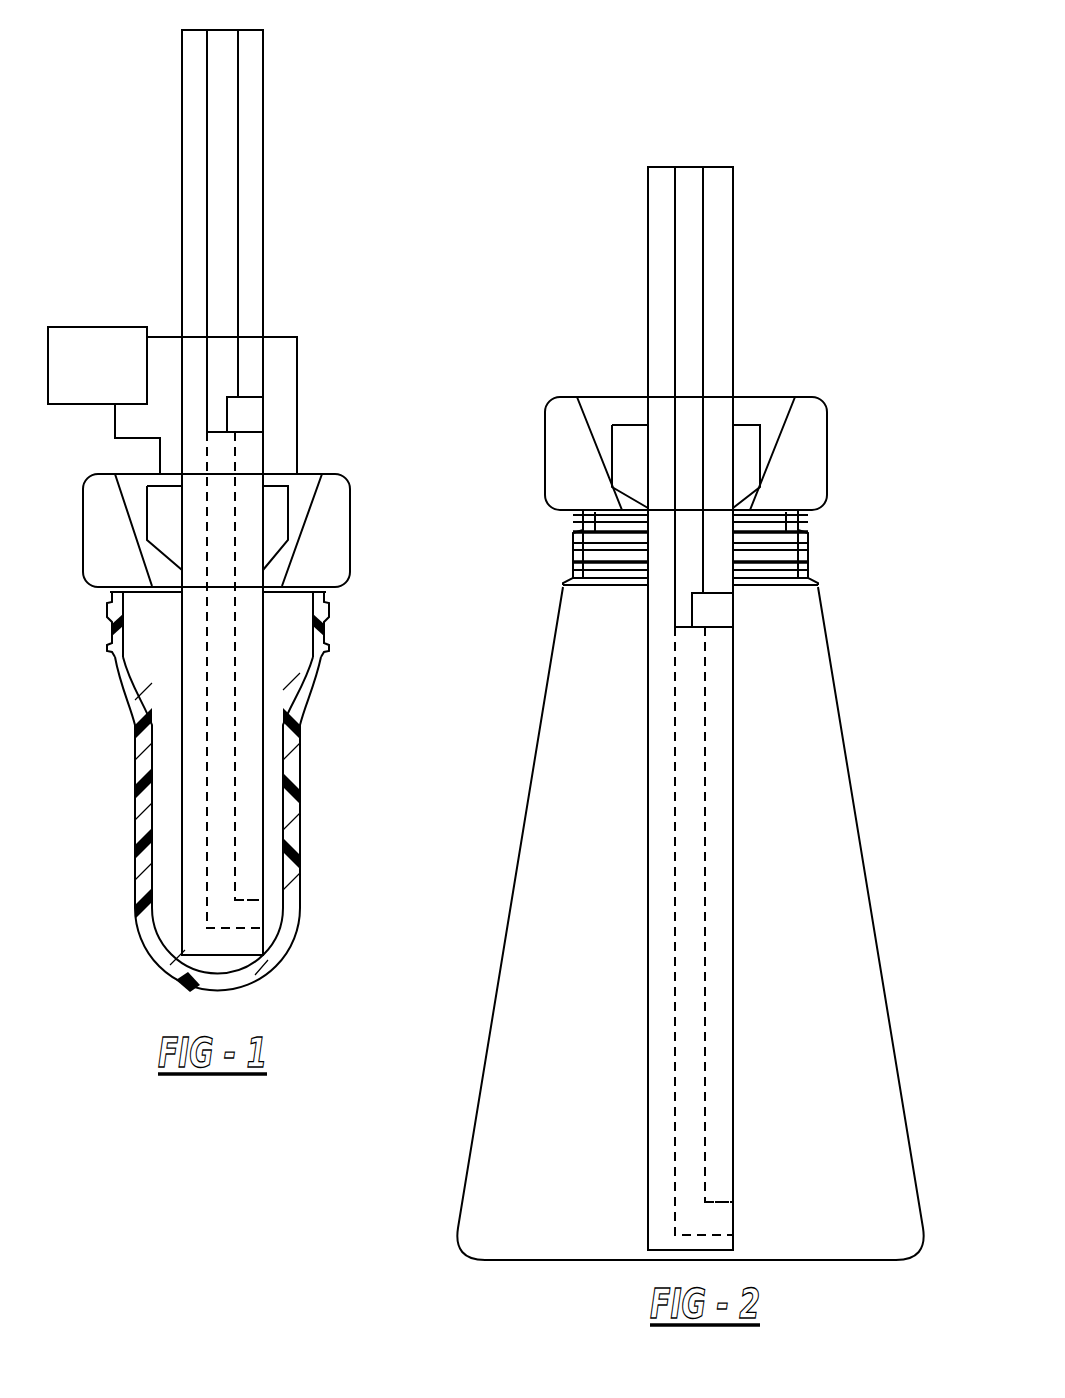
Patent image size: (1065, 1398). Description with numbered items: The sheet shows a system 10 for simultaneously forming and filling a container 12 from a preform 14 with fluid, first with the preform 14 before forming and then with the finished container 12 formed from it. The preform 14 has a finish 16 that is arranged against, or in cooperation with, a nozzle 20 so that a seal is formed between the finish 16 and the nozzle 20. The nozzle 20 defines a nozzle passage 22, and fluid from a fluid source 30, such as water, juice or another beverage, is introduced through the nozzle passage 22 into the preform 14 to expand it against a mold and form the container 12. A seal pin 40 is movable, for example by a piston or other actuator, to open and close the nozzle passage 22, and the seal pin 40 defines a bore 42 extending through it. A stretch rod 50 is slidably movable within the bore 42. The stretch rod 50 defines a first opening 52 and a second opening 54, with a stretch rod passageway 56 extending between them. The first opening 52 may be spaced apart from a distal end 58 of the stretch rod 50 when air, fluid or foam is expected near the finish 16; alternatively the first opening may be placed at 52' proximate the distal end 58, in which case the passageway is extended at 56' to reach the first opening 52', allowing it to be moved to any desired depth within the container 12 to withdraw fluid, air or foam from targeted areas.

In FIG. 1, the system 10 is at (112, 106).
In FIG. 2, the system 10 is at (818, 185).
In FIG. 2, the container 12 is at (483, 1105).
In FIG. 1, the preform 14 is at (143, 770).
In FIG. 1, the finish 16 is at (108, 618).
In FIG. 2, the finish 16 is at (797, 562).
In FIG. 1, the nozzle 20 is at (103, 523).
In FIG. 2, the nozzle 20 is at (567, 475).
In FIG. 1, the nozzle passage 22 is at (150, 556).
In FIG. 2, the nozzle passage 22 is at (750, 505).
In FIG. 1, the fluid source 30 is at (108, 325).
In FIG. 1, the seal pin 40 is at (155, 500).
In FIG. 2, the seal pin 40 is at (627, 443).
In FIG. 1, the bore 42 is at (263, 522).
In FIG. 2, the bore 42 is at (733, 452).
In FIG. 1, the stretch rod 50 is at (182, 232).
In FIG. 2, the stretch rod 50 is at (648, 187).
In FIG. 1, the first opening 52 is at (310, 365).
In FIG. 2, the first opening 52 is at (806, 639).
In FIG. 1, the first opening 52' is at (310, 950).
In FIG. 2, the first opening 52' is at (815, 1255).
In FIG. 1, the second opening 54 is at (222, 30).
In FIG. 2, the second opening 54 is at (690, 167).
In FIG. 1, the stretch rod passageway 56 is at (298, 231).
In FIG. 2, the stretch rod passageway 56 is at (740, 397).
In FIG. 1, the stretch rod passageway 56' is at (308, 680).
In FIG. 2, the stretch rod passageway 56' is at (806, 931).
In FIG. 1, the distal end 58 is at (205, 985).
In FIG. 2, the distal end 58 is at (648, 1230).